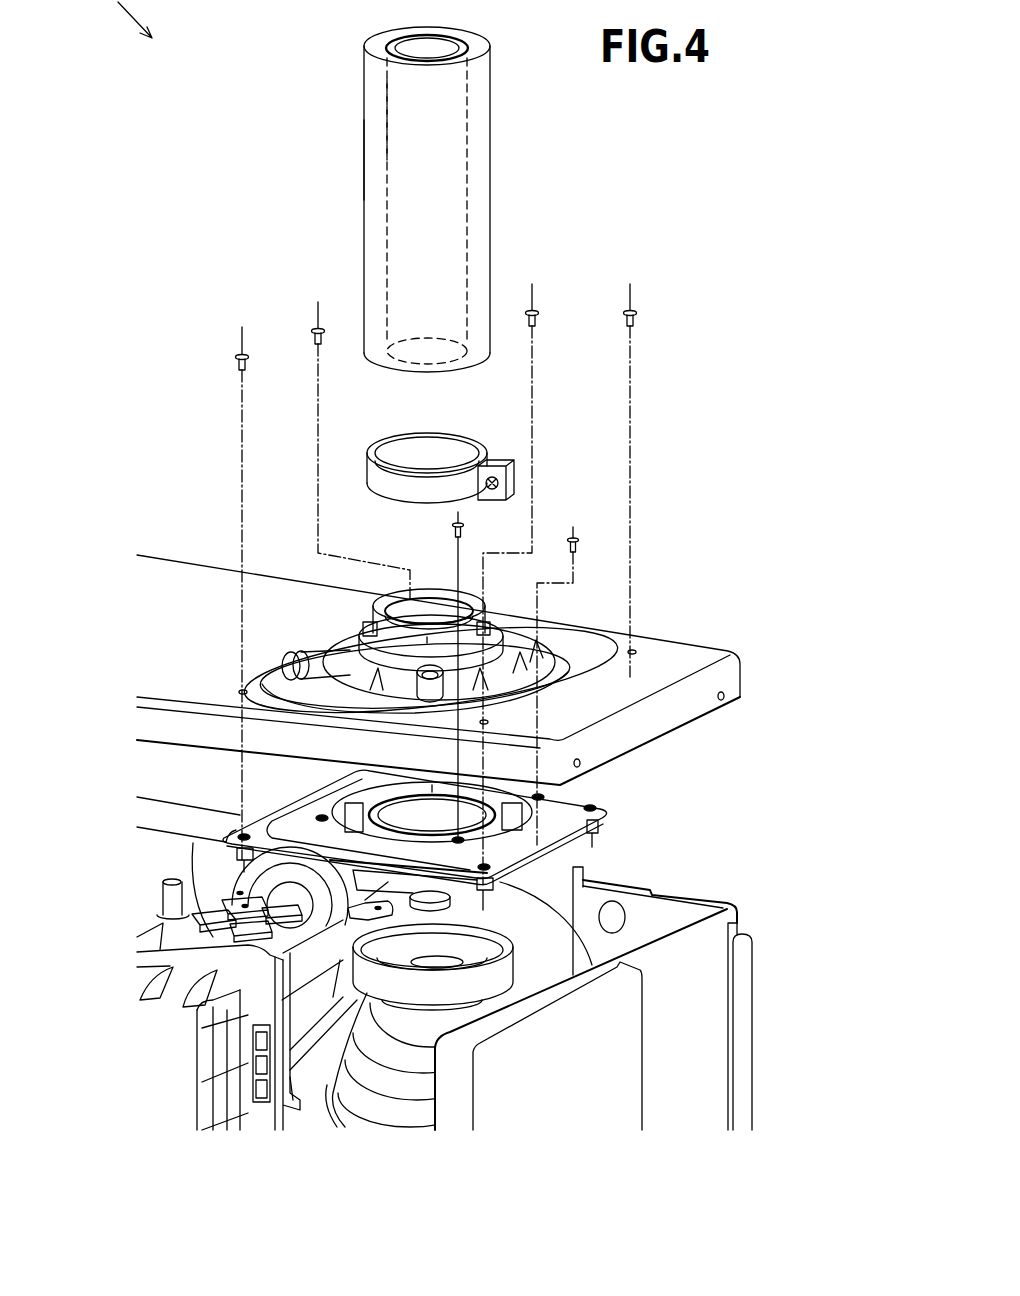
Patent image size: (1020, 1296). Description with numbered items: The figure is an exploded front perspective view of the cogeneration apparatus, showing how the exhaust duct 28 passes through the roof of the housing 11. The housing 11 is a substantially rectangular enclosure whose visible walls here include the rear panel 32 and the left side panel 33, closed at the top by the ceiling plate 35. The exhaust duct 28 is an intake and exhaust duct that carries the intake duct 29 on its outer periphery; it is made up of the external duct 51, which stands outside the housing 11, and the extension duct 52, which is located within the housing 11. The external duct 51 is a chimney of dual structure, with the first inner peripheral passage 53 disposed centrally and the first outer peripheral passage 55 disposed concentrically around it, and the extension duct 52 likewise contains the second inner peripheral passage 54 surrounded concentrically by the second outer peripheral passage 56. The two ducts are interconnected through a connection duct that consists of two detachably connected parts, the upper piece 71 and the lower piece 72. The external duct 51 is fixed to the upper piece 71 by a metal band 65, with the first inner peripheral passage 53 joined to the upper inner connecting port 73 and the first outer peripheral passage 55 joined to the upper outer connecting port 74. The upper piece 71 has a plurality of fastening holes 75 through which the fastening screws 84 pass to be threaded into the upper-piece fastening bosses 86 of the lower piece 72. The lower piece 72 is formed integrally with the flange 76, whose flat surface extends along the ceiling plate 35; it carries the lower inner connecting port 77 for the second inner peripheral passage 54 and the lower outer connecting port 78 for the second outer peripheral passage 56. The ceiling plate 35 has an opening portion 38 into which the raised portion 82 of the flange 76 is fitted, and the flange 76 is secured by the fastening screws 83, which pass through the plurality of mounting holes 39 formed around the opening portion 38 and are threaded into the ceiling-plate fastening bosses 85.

The housing 11 is at (498, 948).
The exhaust duct 28 is at (383, 120).
The intake duct 29 is at (366, 153).
The rear panel 32 is at (690, 883).
The left side panel 33 is at (700, 980).
The ceiling plate 35 is at (437, 623).
The opening portion 38 is at (583, 640).
The mounting holes 39 is at (634, 650).
The external duct 51 is at (452, 199).
The extension duct 52 is at (464, 1025).
The first inner peripheral passage 53 is at (468, 150).
The second inner peripheral passage 54 is at (500, 975).
The first outer peripheral passage 55 is at (491, 200).
The second outer peripheral passage 56 is at (470, 1012).
The metal band 65 is at (445, 430).
The upper piece 71 is at (528, 614).
The lower piece 72 is at (499, 836).
The upper inner connecting port 73 is at (428, 600).
The upper outer connecting port 74 is at (370, 607).
The fastening holes 75 is at (521, 655).
The flange 76 is at (240, 818).
The lower inner connecting port 77 is at (463, 900).
The lower outer connecting port 78 is at (357, 960).
The raised portion 82 is at (285, 810).
The fastening screws 83 is at (240, 354).
The fastening screws 84 is at (466, 524).
The ceiling-plate fastening bosses 85 is at (600, 824).
The upper-piece fastening bosses 86 is at (326, 815).